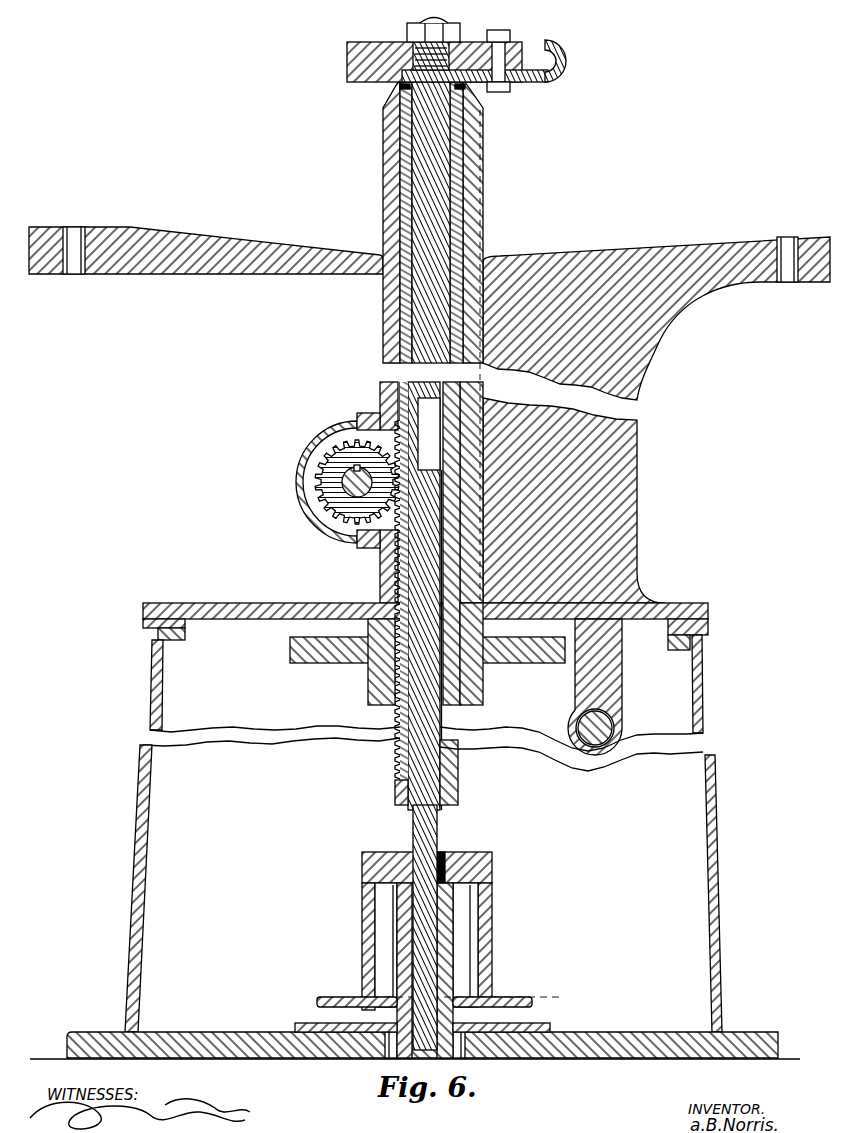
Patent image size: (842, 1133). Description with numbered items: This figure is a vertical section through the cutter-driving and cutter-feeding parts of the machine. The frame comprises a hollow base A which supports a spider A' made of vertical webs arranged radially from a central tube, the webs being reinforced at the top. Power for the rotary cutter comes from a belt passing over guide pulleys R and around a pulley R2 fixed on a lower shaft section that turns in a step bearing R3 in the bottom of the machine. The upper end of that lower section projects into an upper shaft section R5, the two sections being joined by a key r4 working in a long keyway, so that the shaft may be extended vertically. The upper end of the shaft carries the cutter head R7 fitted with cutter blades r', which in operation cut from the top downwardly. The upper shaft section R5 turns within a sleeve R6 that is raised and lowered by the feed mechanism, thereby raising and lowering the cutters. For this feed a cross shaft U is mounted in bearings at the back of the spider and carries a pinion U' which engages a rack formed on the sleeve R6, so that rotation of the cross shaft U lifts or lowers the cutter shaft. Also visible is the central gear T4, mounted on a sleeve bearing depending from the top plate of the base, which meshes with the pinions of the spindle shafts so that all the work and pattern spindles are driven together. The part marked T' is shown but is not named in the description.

The hollow base A is at (422, 846).
The spider A' is at (429, 366).
The guide pulleys R is at (440, 824).
The pulley R2 is at (495, 920).
The step bearing R3 is at (545, 1026).
The upper shaft section R5 is at (455, 190).
The sleeve R6 is at (455, 752).
The cutter head R7 is at (345, 64).
The cutter blades r' is at (568, 64).
The key r4 is at (460, 787).
The central gear T4 is at (333, 663).
The hooked bracket T' is at (617, 687).
The cross shaft U is at (324, 482).
The pinion U' is at (301, 480).